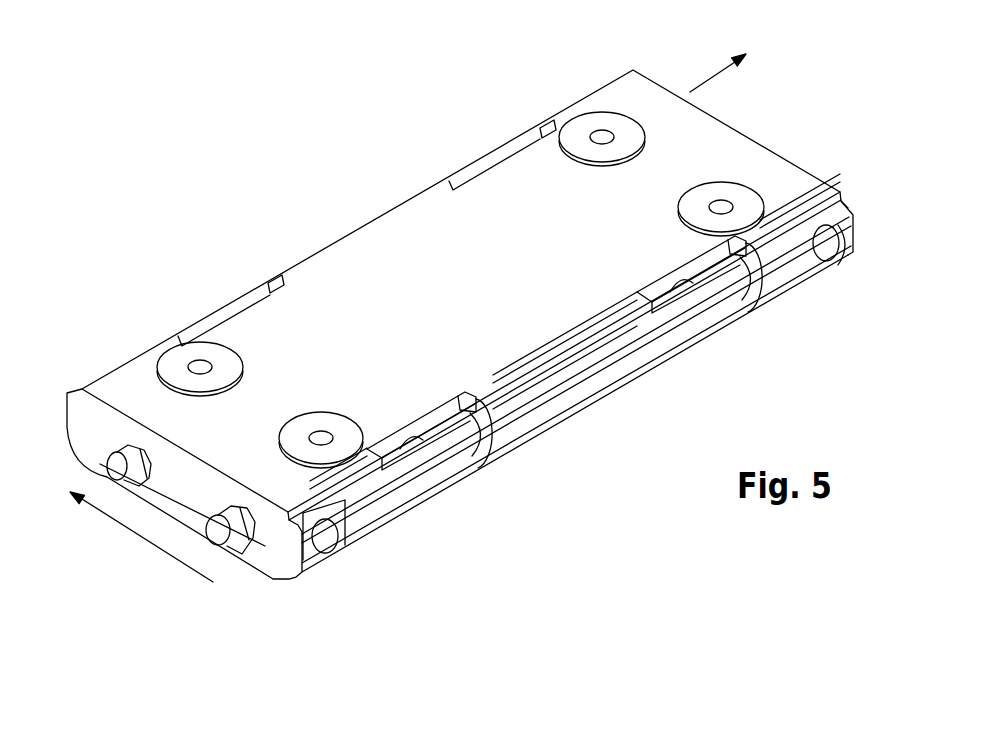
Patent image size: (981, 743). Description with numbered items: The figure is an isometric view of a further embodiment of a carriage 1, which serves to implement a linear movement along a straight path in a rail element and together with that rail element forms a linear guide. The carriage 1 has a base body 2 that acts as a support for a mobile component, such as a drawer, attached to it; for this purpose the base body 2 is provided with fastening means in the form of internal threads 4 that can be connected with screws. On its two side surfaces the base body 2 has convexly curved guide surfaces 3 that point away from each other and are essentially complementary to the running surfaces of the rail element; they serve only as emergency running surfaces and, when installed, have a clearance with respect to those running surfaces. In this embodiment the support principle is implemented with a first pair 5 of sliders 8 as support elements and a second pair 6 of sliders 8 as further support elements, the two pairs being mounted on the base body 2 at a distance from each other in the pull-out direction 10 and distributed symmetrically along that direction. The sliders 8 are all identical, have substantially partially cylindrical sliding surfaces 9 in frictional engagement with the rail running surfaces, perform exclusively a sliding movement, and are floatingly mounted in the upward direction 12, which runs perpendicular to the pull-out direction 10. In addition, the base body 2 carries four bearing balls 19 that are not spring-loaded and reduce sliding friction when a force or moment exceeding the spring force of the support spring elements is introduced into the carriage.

The carriage 1 is at (784, 119).
The base body 2 is at (762, 167).
The guide surfaces 3 is at (343, 233).
The internal threads 4 is at (200, 367).
The first pair of sliders 5 is at (211, 229).
The second pair of sliders 6 is at (419, 107).
The sliders 8 is at (463, 173).
The sliding surfaces 9 is at (488, 150).
The pull-out direction 10 is at (707, 74).
The upward direction 12 is at (130, 530).
The bearing balls 19 is at (327, 533).